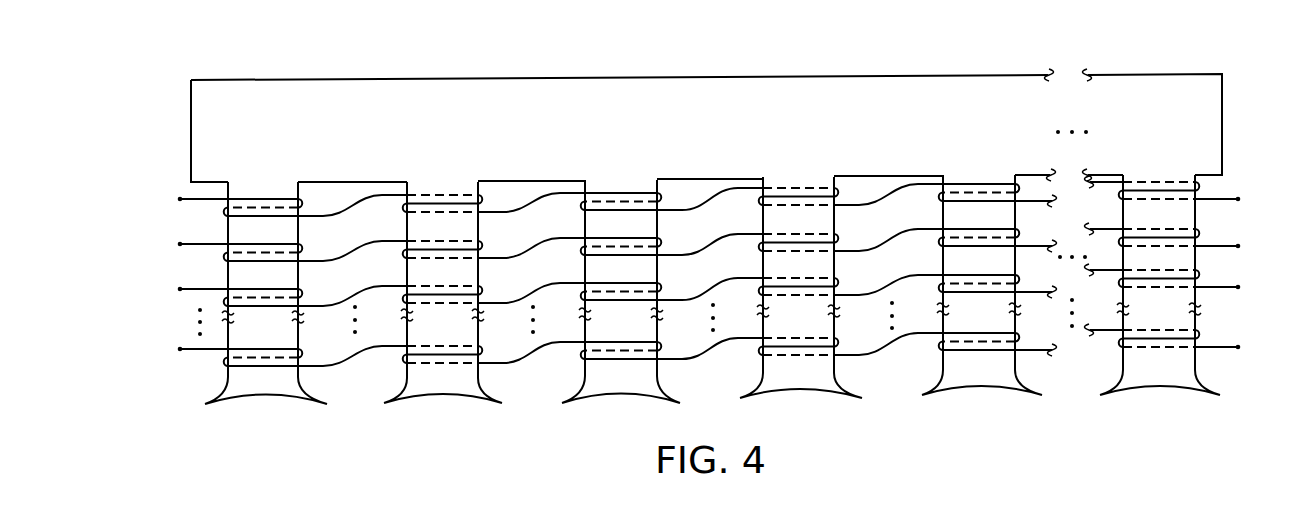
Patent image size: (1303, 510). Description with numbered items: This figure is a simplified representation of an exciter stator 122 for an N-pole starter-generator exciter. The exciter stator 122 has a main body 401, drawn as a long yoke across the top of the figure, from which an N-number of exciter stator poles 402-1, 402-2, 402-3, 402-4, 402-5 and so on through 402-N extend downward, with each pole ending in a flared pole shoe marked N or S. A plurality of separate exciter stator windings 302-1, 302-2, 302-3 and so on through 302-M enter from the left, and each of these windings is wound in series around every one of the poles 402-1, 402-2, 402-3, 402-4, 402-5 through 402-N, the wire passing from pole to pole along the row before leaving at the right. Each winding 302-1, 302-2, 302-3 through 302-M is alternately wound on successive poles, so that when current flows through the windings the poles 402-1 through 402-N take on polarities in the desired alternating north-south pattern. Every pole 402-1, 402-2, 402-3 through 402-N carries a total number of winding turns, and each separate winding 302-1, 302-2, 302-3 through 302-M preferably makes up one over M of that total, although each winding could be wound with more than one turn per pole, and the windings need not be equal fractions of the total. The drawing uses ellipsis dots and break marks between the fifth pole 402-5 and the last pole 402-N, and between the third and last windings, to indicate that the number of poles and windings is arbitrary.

The exciter stator 122 is at (471, 71).
The main body 401 is at (880, 74).
The exciter stator pole 402-1 is at (256, 184).
The exciter stator pole 402-2 is at (435, 188).
The exciter stator pole 402-3 is at (612, 179).
The exciter stator pole 402-4 is at (791, 178).
The exciter stator pole 402-5 is at (973, 179).
The exciter stator pole 402-N is at (1150, 175).
The exciter stator winding 302-1 is at (179, 198).
The exciter stator winding 302-2 is at (179, 244).
The exciter stator winding 302-3 is at (179, 289).
The exciter stator winding 302-M is at (179, 349).